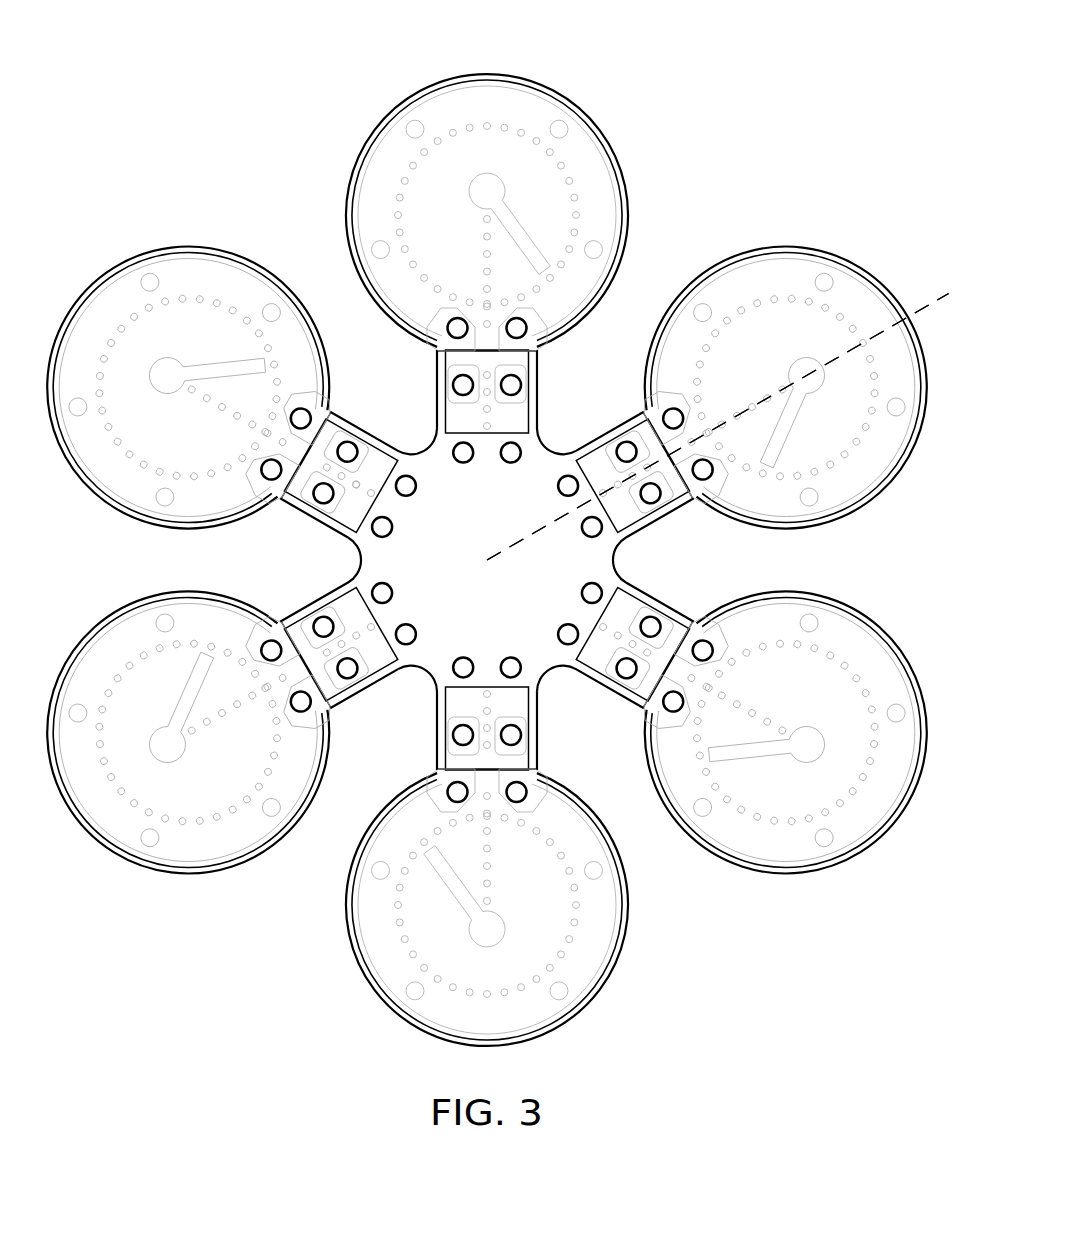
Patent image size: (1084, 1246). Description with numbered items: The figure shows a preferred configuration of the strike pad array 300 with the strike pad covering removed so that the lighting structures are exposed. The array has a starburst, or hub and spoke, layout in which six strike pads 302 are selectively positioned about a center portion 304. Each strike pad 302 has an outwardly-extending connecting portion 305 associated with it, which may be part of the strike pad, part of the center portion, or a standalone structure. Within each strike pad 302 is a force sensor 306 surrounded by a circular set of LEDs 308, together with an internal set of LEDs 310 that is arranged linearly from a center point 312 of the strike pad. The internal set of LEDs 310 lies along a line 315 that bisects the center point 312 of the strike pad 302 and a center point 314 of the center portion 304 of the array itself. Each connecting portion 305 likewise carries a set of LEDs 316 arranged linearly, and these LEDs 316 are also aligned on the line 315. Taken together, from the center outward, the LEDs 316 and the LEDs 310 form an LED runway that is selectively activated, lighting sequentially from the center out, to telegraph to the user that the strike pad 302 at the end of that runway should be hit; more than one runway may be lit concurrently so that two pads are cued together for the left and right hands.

The strike pad array 300 is at (195, 987).
The strike pad 302 is at (867, 467).
The center portion 304 is at (487, 560).
The connecting portion 305 is at (540, 712).
The force sensor 306 is at (487, 183).
The circular set of LEDs 308 is at (572, 183).
The internal set of LEDs 310 is at (483, 236).
The center point of the strike pad 312 is at (484, 219).
The center point of the center portion 314 is at (487, 562).
The line 315 is at (938, 294).
The set of LEDs of the connecting portion 316 is at (360, 482).